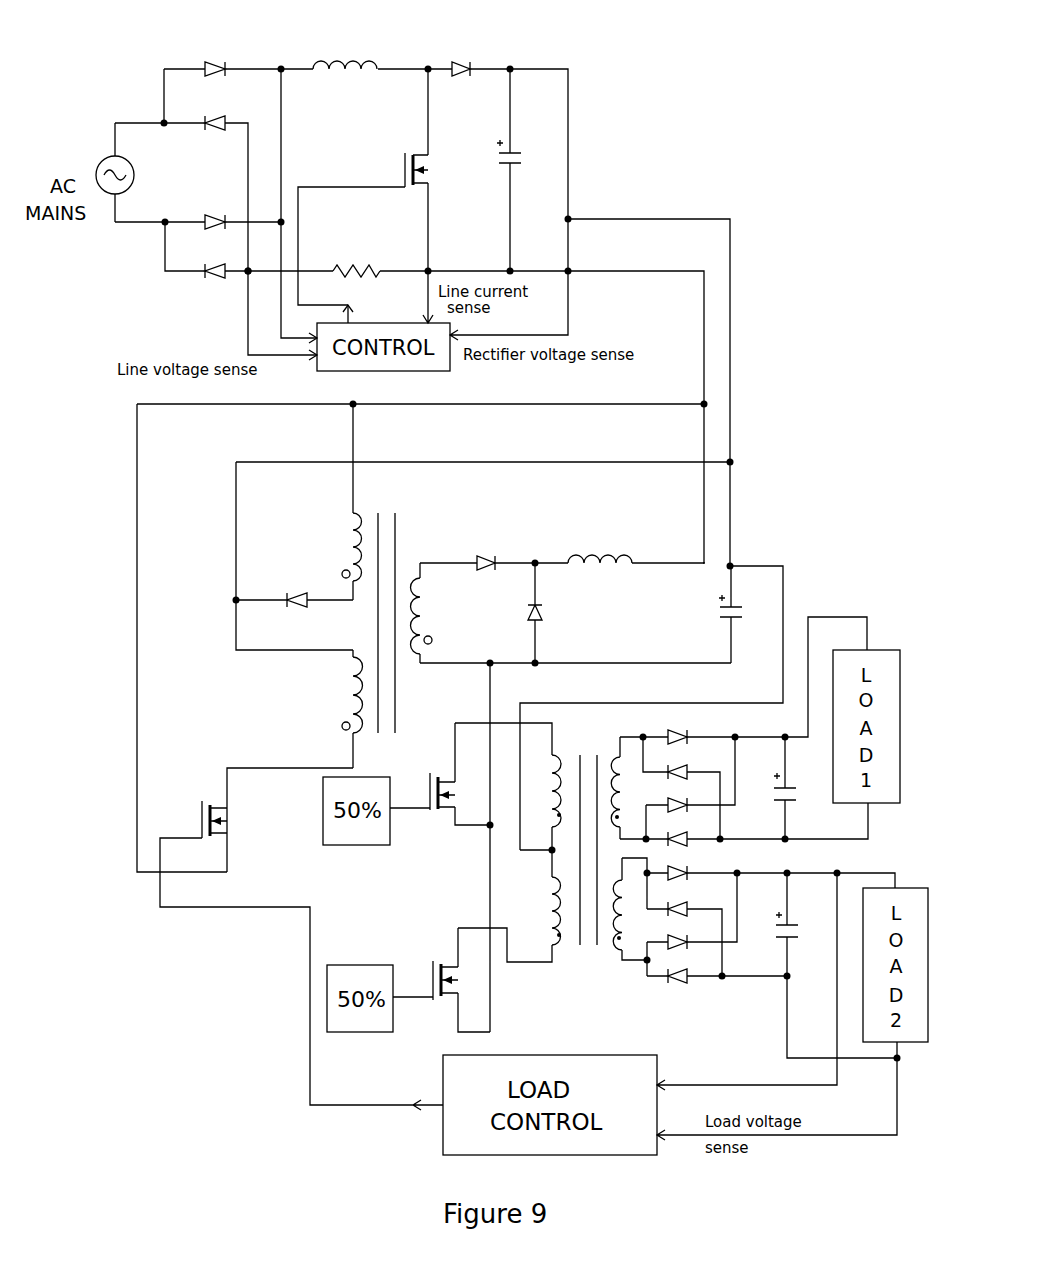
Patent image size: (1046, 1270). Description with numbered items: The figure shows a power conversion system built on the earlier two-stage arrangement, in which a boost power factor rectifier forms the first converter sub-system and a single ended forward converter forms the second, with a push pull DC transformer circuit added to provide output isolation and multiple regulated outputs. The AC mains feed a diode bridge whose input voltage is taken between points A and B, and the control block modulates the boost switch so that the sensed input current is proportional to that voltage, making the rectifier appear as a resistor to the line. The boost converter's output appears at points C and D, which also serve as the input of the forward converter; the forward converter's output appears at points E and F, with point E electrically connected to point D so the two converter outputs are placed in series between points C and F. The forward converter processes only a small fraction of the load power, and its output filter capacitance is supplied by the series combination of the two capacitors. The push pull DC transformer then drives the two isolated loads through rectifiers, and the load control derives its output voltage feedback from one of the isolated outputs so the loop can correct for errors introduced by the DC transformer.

The input voltage point A is at (278, 58).
The input voltage point B is at (237, 290).
The point C is at (219, 603).
The point D is at (341, 419).
The point E is at (694, 549).
The point F is at (533, 676).